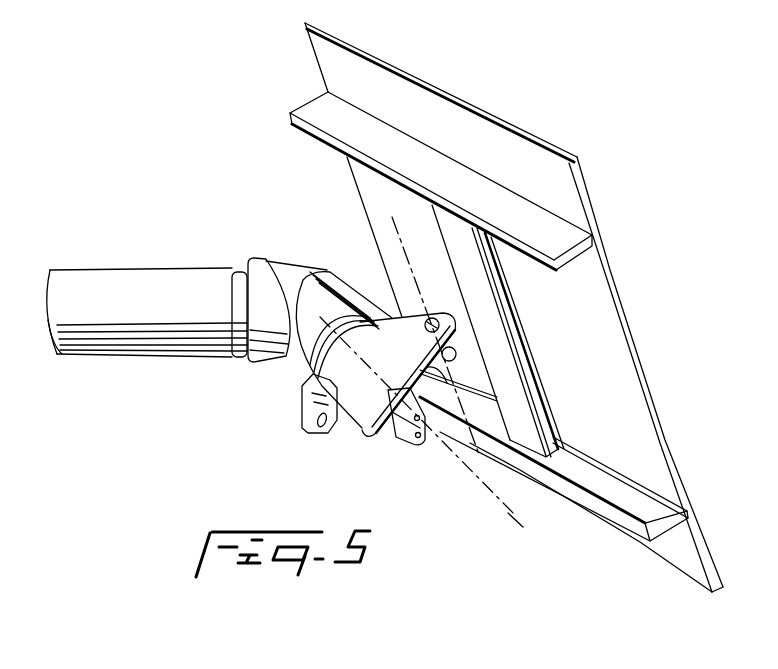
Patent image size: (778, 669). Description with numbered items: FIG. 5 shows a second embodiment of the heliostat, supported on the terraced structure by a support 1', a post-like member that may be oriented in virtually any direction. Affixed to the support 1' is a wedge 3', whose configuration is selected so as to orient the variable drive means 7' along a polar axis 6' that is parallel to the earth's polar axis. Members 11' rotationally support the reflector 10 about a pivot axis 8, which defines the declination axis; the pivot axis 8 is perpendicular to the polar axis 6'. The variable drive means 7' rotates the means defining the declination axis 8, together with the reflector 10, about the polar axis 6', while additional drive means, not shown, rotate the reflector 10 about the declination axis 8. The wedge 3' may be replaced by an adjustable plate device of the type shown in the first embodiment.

The support 1' is at (139, 344).
The wedge 3' is at (274, 338).
The polar axis 6' is at (421, 457).
The variable drive means 7' is at (394, 375).
The pivot axis 8 is at (405, 242).
The reflector 10 is at (583, 188).
The members 11' is at (519, 331).